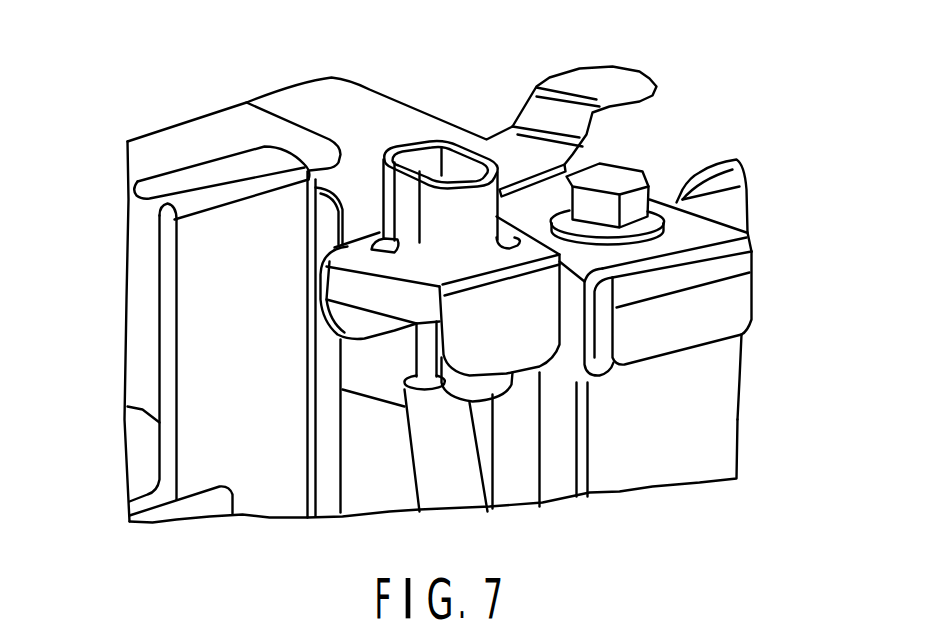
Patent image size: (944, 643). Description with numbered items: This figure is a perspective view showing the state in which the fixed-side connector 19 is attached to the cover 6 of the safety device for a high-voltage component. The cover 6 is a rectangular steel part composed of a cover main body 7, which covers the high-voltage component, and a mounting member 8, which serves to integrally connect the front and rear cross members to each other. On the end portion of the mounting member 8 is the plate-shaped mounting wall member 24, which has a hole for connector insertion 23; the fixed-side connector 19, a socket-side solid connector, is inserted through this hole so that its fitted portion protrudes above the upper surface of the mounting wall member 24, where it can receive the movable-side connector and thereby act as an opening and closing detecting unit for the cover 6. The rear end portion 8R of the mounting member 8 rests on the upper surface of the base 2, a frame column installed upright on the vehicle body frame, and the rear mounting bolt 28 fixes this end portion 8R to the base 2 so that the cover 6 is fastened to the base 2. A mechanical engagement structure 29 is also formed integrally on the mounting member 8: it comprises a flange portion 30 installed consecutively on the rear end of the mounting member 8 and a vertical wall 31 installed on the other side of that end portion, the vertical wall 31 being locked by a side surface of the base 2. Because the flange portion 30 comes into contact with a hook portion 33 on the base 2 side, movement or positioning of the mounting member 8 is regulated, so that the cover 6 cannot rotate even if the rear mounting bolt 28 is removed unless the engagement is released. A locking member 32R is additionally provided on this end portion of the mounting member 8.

The base 2 is at (710, 412).
The cover 6 is at (492, 82).
The cover main body 7 is at (183, 153).
The mounting member 8 is at (328, 105).
The rear end portion of the mounting member 8R is at (690, 240).
The fixed-side connector 19 is at (390, 150).
The hole for connector insertion 23 is at (405, 270).
The plate-shaped mounting wall member 24 is at (340, 298).
The rear mounting bolt 28 is at (618, 180).
The mechanical engagement structure 29 is at (773, 276).
The flange portion 30 is at (730, 212).
The vertical wall 31 is at (572, 345).
The rear locking member 32R is at (620, 85).
The hook portion 33 is at (717, 183).